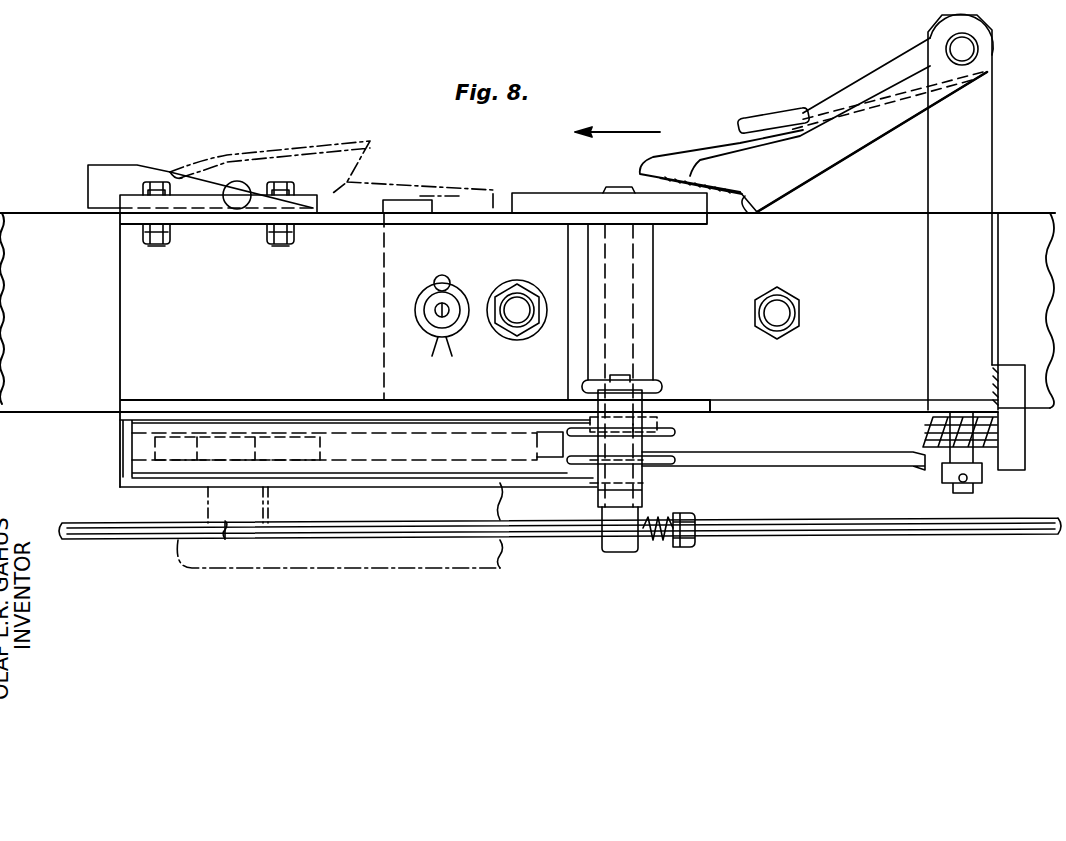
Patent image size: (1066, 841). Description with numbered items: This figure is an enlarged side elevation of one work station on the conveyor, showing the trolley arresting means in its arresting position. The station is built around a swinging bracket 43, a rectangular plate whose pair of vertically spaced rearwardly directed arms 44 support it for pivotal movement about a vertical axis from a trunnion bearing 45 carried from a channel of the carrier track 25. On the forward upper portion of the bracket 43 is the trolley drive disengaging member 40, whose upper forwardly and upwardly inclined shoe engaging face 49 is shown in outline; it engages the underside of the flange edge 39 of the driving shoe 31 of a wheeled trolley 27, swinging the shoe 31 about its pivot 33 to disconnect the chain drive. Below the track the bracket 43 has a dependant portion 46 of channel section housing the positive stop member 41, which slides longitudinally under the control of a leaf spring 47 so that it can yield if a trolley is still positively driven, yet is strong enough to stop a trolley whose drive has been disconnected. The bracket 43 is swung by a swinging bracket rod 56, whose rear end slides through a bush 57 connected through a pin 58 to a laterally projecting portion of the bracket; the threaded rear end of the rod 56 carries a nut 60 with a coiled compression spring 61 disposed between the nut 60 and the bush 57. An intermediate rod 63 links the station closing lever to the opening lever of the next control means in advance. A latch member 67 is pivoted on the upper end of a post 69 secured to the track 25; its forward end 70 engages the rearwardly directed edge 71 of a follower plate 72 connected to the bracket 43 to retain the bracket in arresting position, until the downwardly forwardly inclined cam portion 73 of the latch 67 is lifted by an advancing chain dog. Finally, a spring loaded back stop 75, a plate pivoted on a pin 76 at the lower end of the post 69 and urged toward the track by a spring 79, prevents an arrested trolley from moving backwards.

The carrier track 25 is at (1030, 220).
The wheeled trolley 27 is at (447, 200).
The driving shoe 31 is at (317, 113).
The shoe pivot 33 is at (238, 200).
The flange edge 39 is at (168, 170).
The trolley drive disengaging member 40 is at (115, 175).
The positive stop member 41 is at (148, 447).
The swinging bracket 43 is at (128, 350).
The rearwardly directed arms 44 is at (680, 218).
The trunnion bearing 45 is at (638, 302).
The dependant channel portion 46 is at (228, 480).
The leaf spring 47 is at (393, 455).
The shoe engaging face 49 is at (213, 180).
The swinging bracket rod 56 is at (358, 522).
The bush 57 is at (612, 546).
The pin 58 is at (643, 497).
The nut 60 is at (690, 541).
The coiled compression spring 61 is at (654, 541).
The intermediate rod 63 is at (185, 522).
The latch member 67 is at (870, 131).
The post 69 is at (985, 128).
The latch forward end 70 is at (797, 188).
The rearwardly directed edge 71 is at (742, 198).
The follower plate 72 is at (587, 200).
The cam portion 73 is at (795, 118).
The spring loaded back stop 75 is at (780, 460).
The pin 76 is at (955, 487).
The spring 79 is at (923, 425).